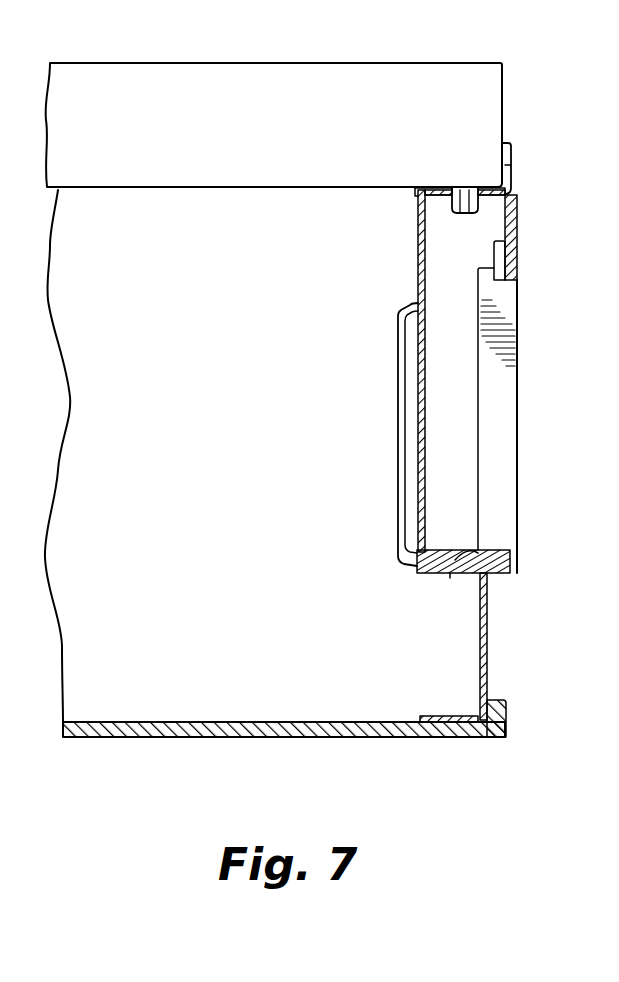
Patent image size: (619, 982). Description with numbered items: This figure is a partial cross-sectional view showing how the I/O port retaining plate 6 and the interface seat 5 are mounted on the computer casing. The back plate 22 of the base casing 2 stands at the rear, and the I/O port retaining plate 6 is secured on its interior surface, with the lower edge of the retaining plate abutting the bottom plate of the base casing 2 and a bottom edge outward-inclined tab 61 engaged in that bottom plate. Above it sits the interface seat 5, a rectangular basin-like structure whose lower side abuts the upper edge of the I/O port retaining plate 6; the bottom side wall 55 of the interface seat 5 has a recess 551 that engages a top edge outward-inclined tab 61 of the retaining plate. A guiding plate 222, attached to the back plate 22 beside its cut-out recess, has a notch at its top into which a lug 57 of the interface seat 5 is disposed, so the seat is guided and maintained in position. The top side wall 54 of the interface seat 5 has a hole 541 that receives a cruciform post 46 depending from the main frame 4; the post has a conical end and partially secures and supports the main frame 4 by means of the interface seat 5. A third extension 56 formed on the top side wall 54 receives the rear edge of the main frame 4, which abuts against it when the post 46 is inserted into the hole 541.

The base casing 2 is at (300, 740).
The main frame 4 is at (496, 78).
The interface seat 5 is at (445, 454).
The I/O port retaining plate 6 is at (452, 702).
The back plate 22 is at (505, 702).
The cruciform post 46 is at (471, 188).
The top side wall 54 is at (412, 190).
The bottom side wall 55 is at (488, 560).
The third extension 56 is at (512, 165).
The lug 57 is at (500, 262).
The outward-inclined tab 61 is at (450, 575).
The guiding plate 222 is at (508, 368).
The hole 541 is at (457, 185).
The recess 551 is at (455, 552).